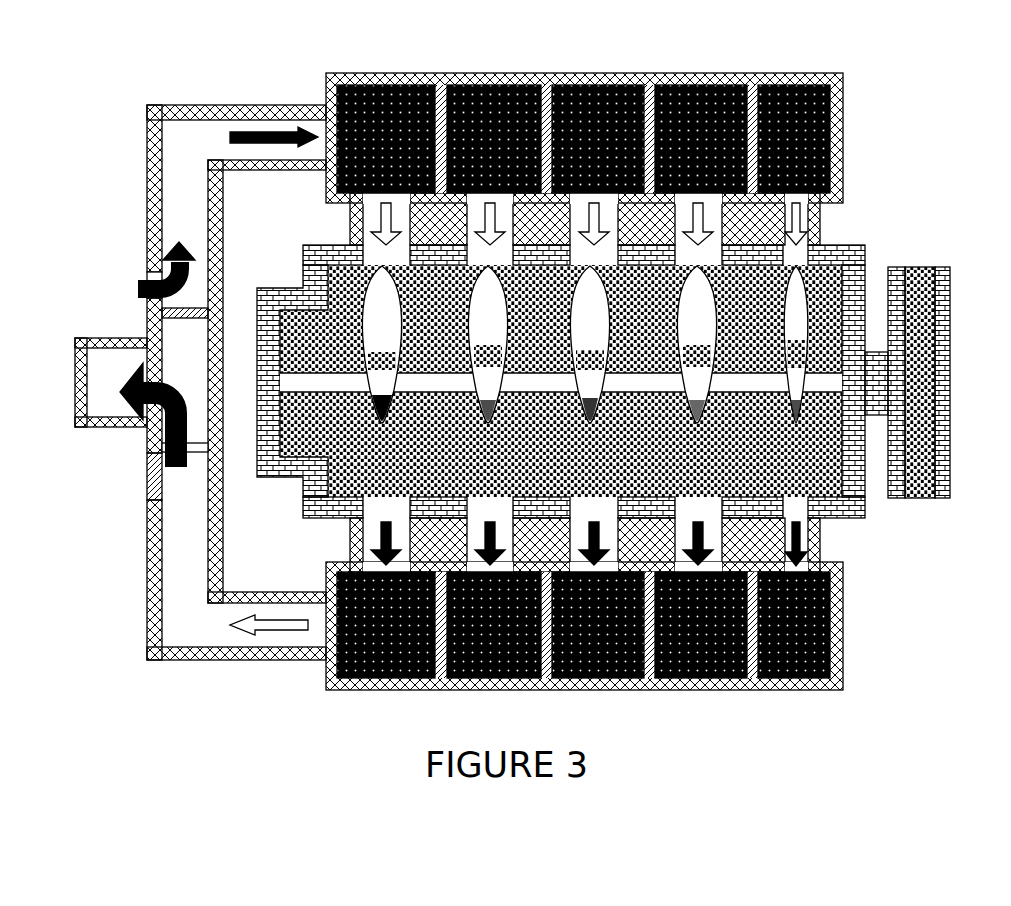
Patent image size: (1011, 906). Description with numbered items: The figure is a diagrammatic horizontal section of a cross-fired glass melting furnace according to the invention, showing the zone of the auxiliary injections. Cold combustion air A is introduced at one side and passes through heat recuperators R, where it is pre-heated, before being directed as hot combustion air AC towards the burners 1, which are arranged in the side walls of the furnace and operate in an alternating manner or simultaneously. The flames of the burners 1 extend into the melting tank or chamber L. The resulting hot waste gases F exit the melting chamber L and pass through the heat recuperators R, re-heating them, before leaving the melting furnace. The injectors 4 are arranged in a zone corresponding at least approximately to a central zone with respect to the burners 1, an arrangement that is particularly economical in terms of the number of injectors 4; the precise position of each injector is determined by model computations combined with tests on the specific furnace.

The cold combustion air A is at (138, 277).
The heat recuperators R is at (810, 113).
The hot combustion air AC is at (800, 219).
The burners 1 is at (800, 260).
The injectors 4 is at (738, 388).
The melting tank or chamber L is at (368, 453).
The waste gases F is at (807, 549).